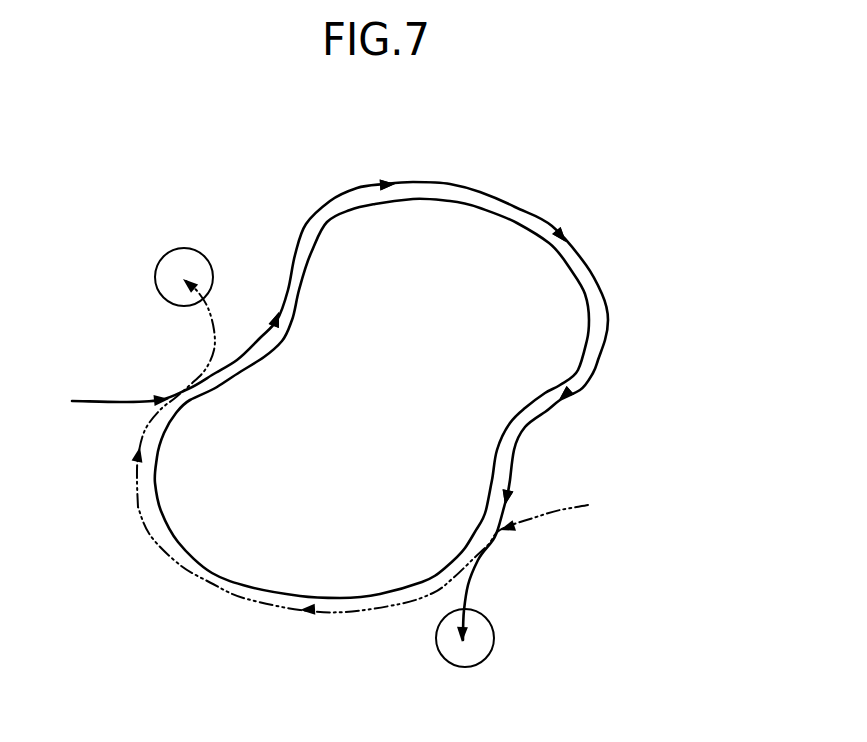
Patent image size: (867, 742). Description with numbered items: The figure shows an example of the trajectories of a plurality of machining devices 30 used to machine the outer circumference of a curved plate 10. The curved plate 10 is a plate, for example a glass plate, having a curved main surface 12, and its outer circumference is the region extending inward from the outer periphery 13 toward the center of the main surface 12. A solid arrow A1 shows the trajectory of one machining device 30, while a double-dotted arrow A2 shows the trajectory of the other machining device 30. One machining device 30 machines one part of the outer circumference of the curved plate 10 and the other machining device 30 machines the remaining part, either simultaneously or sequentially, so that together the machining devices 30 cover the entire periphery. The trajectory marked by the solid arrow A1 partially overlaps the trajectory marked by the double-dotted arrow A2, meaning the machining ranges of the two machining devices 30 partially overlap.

The curved plate 10 is at (480, 240).
The main surface 12 is at (423, 208).
The outer periphery 13 is at (332, 222).
The solid arrow A1 is at (594, 373).
The double-dotted arrow A2 is at (229, 590).
The machining device 30 is at (163, 277).